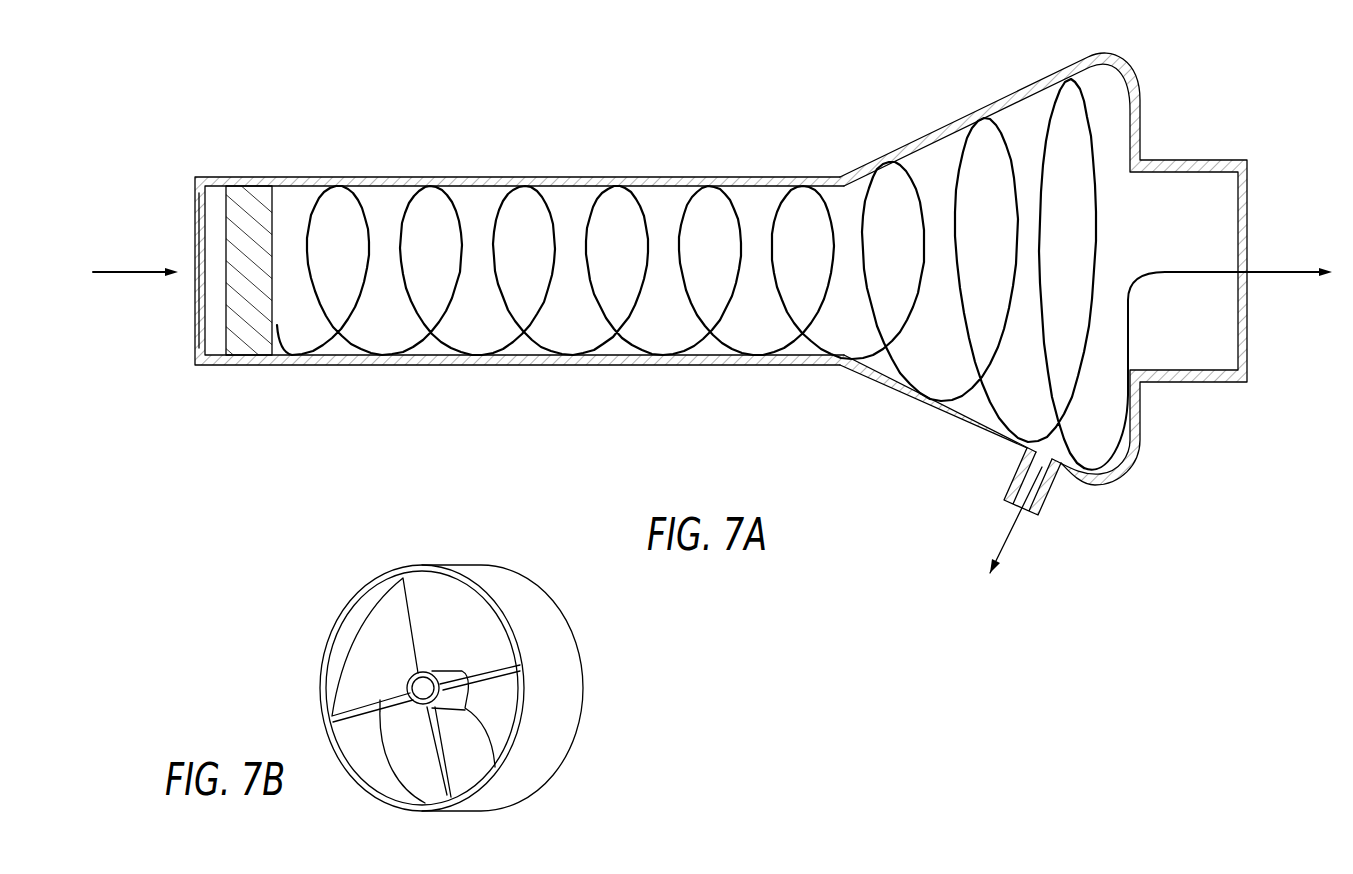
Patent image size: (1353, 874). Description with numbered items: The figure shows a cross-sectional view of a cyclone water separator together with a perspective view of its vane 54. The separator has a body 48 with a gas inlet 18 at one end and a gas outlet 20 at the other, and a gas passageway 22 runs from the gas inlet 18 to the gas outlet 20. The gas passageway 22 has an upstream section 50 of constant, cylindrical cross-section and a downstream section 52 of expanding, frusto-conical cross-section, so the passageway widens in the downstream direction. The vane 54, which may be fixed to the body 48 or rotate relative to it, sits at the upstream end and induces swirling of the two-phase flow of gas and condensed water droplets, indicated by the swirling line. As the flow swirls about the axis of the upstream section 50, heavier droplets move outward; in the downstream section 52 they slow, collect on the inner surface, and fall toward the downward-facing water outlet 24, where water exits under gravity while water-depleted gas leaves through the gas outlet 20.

In FIG. 7A, the gas inlet 18 is at (155, 312).
In FIG. 7A, the gas outlet 20 is at (1278, 339).
In FIG. 7A, the gas passageway 22 is at (563, 197).
In FIG. 7A, the water outlet 24 is at (1020, 500).
In FIG. 7A, the body 48 is at (697, 368).
In FIG. 7A, the upstream section 50 is at (440, 426).
In FIG. 7A, the downstream section 52 is at (955, 80).
In FIG. 7A, the vane 54 is at (243, 197).
In FIG. 7B, the vane 54 is at (330, 637).